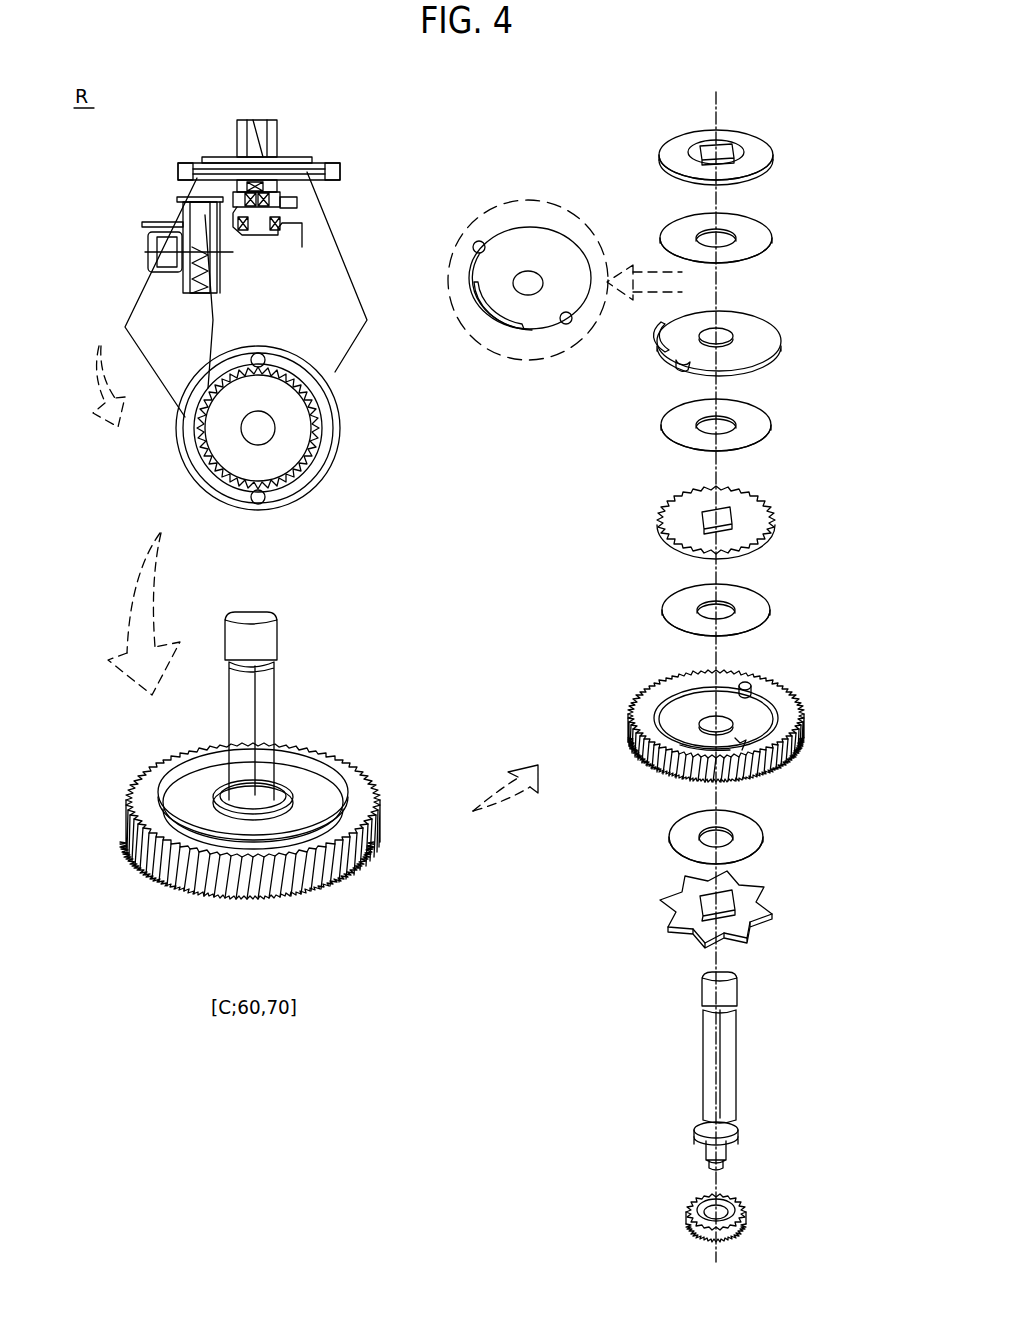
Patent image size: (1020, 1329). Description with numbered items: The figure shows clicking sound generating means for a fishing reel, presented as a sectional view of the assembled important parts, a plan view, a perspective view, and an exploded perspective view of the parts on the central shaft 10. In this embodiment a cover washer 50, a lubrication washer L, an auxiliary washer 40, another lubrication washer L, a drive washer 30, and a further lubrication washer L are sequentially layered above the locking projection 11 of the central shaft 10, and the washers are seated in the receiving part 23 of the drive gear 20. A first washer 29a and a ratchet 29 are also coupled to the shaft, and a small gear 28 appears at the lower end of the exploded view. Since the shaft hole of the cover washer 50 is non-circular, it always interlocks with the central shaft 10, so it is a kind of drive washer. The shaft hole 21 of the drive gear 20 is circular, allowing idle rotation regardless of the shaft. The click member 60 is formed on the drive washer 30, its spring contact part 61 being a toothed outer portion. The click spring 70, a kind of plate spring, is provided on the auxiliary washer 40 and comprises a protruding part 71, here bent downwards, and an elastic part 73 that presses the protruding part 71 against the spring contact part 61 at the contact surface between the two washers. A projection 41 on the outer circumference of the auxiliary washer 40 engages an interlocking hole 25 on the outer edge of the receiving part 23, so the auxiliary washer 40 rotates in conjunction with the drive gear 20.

The central shaft 10 is at (267, 140).
The locking projection 11 is at (742, 1130).
The drive gear 20 is at (340, 170).
The shaft hole 21 is at (720, 725).
The receiving part 23 is at (742, 748).
The interlocking hole 25 is at (745, 682).
The small gear 28 is at (300, 205).
The ratchet 29 is at (310, 192).
The first washer 29a is at (748, 830).
The drive washer 30 is at (768, 500).
The auxiliary washer 40 is at (538, 381).
The projection 41 is at (262, 352).
The cover washer 50 is at (290, 410).
The click member 60 is at (768, 522).
The spring contact part 61 is at (770, 508).
The click spring 70 is at (528, 348).
The protruding part 71 is at (530, 340).
The elastic part 73 is at (480, 312).
The lubrication washer L is at (758, 228).